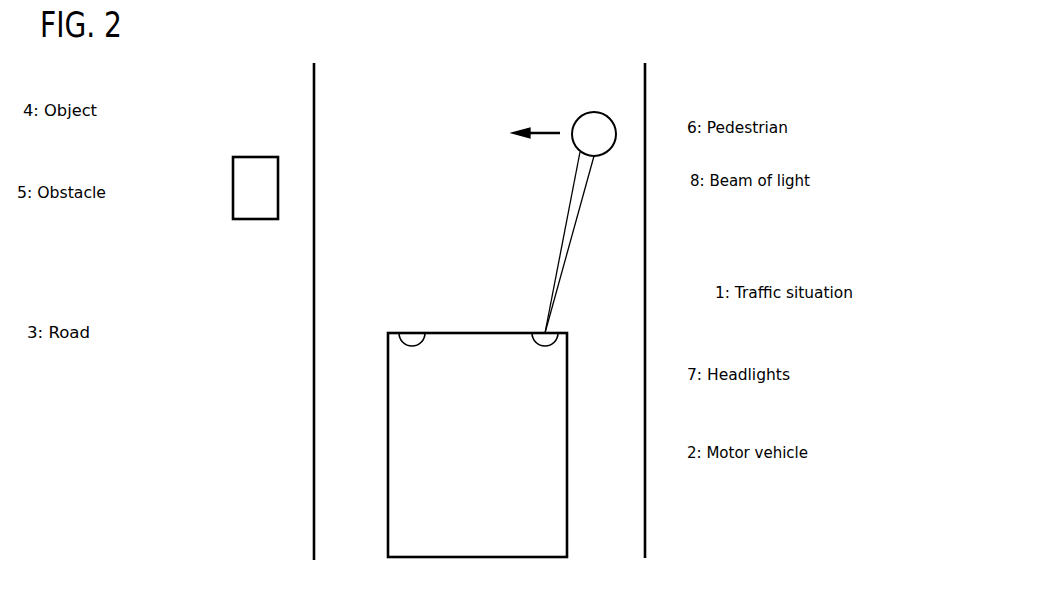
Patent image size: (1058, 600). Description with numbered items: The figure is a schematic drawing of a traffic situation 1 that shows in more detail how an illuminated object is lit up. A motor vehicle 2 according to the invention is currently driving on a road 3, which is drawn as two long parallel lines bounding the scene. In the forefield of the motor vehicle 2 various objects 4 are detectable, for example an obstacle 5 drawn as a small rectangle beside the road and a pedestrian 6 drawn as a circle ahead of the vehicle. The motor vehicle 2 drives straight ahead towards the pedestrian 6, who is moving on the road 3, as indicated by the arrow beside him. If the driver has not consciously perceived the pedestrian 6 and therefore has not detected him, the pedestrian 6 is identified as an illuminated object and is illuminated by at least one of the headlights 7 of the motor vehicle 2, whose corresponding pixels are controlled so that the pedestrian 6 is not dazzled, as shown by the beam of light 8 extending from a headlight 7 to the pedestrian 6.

The traffic situation 1 is at (673, 275).
The motor vehicle 2 is at (567, 445).
The road 3 is at (313, 357).
The objects 4 is at (222, 140).
The obstacle 5 is at (233, 190).
The pedestrian 6 is at (590, 113).
The headlights 7 is at (412, 350).
The beam of light 8 is at (563, 241).